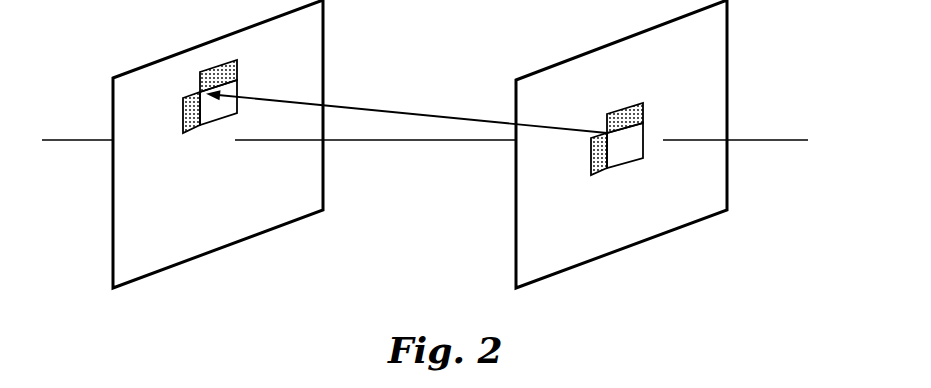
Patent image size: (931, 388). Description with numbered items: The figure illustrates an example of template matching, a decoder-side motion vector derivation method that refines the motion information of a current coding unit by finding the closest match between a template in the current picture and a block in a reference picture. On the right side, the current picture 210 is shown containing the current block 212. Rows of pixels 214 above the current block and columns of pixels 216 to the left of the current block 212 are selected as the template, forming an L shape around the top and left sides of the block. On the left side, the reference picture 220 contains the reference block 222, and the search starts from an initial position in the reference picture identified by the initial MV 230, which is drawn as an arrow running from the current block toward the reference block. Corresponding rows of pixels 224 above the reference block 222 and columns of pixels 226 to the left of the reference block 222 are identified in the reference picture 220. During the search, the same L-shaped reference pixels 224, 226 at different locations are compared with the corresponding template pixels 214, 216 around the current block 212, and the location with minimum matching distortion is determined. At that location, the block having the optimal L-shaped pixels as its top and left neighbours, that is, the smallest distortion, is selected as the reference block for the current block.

The current picture 210 is at (728, 84).
The current block 212 is at (632, 158).
The rows of pixels above current block 214 is at (614, 110).
The columns of pixels to the left of current block 216 is at (590, 159).
The reference picture 220 is at (324, 70).
The reference block 222 is at (222, 125).
The rows of pixels above reference block 224 is at (214, 70).
The columns of pixels to the left of reference block 226 is at (183, 115).
The initial MV 230 is at (388, 110).